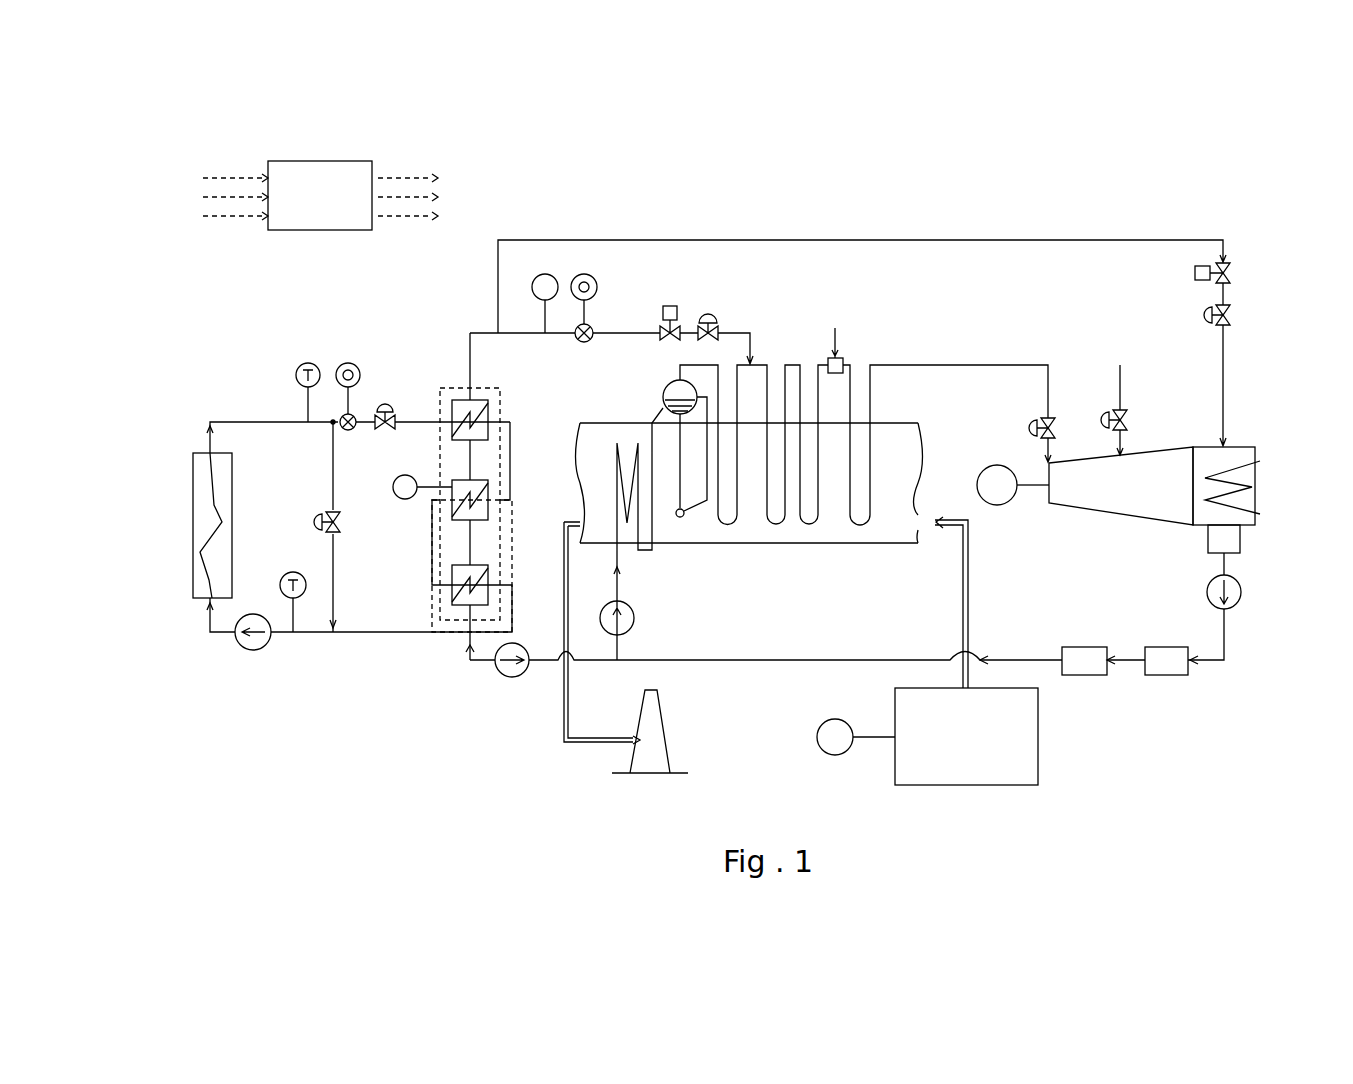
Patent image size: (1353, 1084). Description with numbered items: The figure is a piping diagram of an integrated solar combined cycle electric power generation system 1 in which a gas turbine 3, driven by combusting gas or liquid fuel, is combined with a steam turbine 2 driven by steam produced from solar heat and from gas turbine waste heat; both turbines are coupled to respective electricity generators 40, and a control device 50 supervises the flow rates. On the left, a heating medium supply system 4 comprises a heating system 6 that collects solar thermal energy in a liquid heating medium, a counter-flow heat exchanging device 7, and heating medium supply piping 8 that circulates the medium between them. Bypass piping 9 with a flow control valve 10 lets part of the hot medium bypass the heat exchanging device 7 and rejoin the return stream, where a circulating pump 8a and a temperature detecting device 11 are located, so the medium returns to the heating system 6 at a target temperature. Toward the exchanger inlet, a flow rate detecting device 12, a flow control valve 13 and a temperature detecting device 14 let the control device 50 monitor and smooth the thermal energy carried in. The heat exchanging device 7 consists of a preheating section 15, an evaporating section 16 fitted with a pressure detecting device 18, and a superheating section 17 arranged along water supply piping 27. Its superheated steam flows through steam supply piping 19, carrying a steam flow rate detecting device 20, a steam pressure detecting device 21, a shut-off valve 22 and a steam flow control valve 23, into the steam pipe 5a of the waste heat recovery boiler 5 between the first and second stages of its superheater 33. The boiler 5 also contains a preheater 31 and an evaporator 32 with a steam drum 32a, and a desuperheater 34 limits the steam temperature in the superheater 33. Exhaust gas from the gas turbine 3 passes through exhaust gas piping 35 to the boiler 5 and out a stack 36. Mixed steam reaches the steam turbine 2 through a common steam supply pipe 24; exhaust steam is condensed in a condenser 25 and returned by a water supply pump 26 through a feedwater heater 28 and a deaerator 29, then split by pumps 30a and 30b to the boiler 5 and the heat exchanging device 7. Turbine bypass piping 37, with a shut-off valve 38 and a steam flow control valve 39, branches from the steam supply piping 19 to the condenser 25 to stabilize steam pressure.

The integrated solar combined cycle electric power generation system 1 is at (781, 176).
The steam turbine 2 is at (1165, 446).
The gas turbine 3 is at (965, 788).
The heating medium supply system 4 is at (348, 716).
The waste heat recovery boiler 5 is at (845, 548).
The steam pipe 5a is at (756, 362).
The heating system 6 is at (190, 540).
The heat exchanging device 7 is at (455, 388).
The heating medium supply piping 8 is at (232, 420).
The circulating pump 8a is at (253, 650).
The bypass piping 9 is at (340, 572).
The flow control valve 10 is at (345, 526).
The temperature detecting device 11 is at (290, 572).
The flow rate detecting device 12 is at (346, 362).
The flow control valve 13 is at (385, 404).
The temperature detecting device 14 is at (305, 362).
The preheating section 15 is at (490, 578).
The evaporating section 16 is at (462, 523).
The superheating section 17 is at (447, 410).
The pressure detecting device 18 is at (392, 488).
The steam supply piping 19 is at (620, 333).
The steam flow rate detecting device 20 is at (584, 274).
The steam pressure detecting device 21 is at (545, 274).
The shut-off valve 22 is at (670, 305).
The steam flow control valve 23 is at (708, 312).
The common steam supply pipe 24 is at (968, 364).
The condenser 25 is at (1248, 446).
The water supply pump 26 is at (1242, 592).
The water supply piping 27 is at (468, 656).
The feedwater heater 28 is at (1168, 678).
The deaerator 29 is at (1082, 678).
The pump 30a is at (635, 620).
The pump 30b is at (512, 677).
The preheater 31 is at (627, 548).
The evaporator 32 is at (700, 522).
The steam drum 32a is at (662, 390).
The superheater 33 is at (793, 546).
The desuperheater 34 is at (845, 358).
The exhaust gas piping 35 is at (573, 747).
The stack 36 is at (625, 759).
The turbine bypass piping 37 is at (968, 238).
The shut-off valve 38 is at (1236, 275).
The steam flow control valve 39 is at (1236, 315).
The electricity generator 40 is at (835, 756).
The control device 50 is at (320, 160).